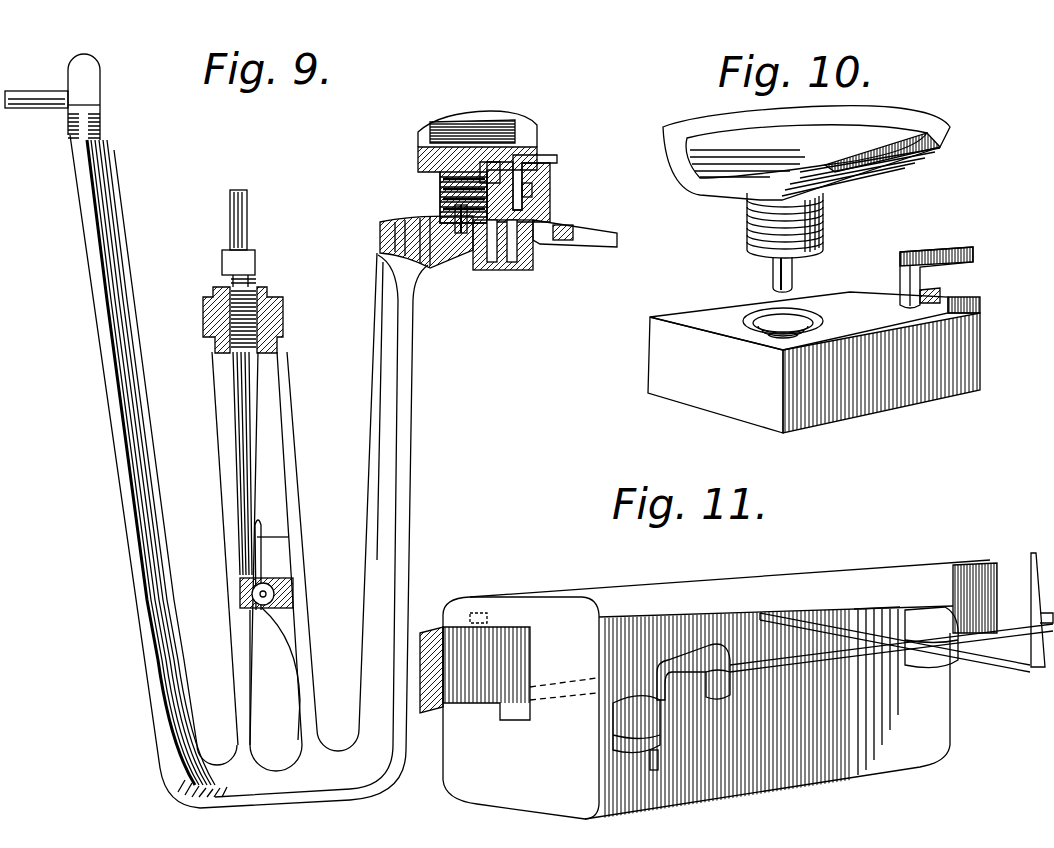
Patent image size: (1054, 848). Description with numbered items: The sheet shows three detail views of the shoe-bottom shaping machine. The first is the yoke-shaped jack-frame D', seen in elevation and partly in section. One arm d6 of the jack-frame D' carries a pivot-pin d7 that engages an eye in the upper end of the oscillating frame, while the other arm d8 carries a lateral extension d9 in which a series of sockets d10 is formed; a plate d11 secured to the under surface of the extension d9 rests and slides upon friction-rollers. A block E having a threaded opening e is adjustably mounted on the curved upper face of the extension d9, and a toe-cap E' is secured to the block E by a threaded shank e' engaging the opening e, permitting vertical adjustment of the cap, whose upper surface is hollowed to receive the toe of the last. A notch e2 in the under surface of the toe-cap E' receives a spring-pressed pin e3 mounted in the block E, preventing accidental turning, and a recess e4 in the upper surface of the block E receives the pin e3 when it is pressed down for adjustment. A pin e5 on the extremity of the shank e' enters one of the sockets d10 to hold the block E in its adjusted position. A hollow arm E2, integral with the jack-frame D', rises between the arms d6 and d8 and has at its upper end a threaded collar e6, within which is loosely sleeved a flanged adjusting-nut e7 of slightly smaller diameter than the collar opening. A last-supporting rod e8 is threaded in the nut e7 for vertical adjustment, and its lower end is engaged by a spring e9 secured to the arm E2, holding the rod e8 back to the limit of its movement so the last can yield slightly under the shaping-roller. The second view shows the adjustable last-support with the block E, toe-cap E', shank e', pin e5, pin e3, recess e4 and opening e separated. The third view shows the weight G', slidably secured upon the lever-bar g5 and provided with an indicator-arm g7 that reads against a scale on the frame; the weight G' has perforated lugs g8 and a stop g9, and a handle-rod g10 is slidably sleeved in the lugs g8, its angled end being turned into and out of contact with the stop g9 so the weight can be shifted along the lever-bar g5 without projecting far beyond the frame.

In FIG. 9, the pivot-pin d7 is at (33, 112).
In FIG. 9, the arm d6 is at (123, 310).
In FIG. 9, the arm d8 is at (414, 462).
In FIG. 9, the jack-frame D' is at (220, 548).
In FIG. 9, the hollow arm E2 is at (283, 403).
In FIG. 9, the spring e9 is at (257, 567).
In FIG. 9, the last-supporting rod e8 is at (247, 233).
In FIG. 9, the adjusting-nut e7 is at (252, 283).
In FIG. 9, the threaded collar e6 is at (277, 287).
In FIG. 9, the toe-cap E' is at (463, 156).
In FIG. 10, the toe-cap E' is at (790, 147).
In FIG. 9, the threaded shank e' is at (425, 180).
In FIG. 10, the threaded shank e' is at (809, 225).
In FIG. 9, the notch e2 is at (527, 152).
In FIG. 9, the block E is at (460, 196).
In FIG. 10, the block E is at (810, 366).
In FIG. 9, the threaded opening e is at (490, 172).
In FIG. 10, the threaded opening e is at (796, 318).
In FIG. 9, the spring-pressed pin e3 is at (557, 160).
In FIG. 10, the spring-pressed pin e3 is at (941, 252).
In FIG. 9, the recess e4 is at (547, 178).
In FIG. 10, the recess e4 is at (944, 298).
In FIG. 9, the pin e5 is at (393, 246).
In FIG. 10, the pin e5 is at (793, 273).
In FIG. 9, the lateral extension d9 is at (445, 253).
In FIG. 9, the plate d11 is at (510, 263).
In FIG. 9, the sockets d10 is at (583, 237).
In FIG. 11, the weight G' is at (720, 670).
In FIG. 11, the lever-bar g5 is at (487, 703).
In FIG. 11, the stop g9 is at (623, 733).
In FIG. 11, the perforated lugs g8 is at (693, 647).
In FIG. 11, the handle-rod g10 is at (891, 669).
In FIG. 11, the indicator-arm g7 is at (1003, 660).